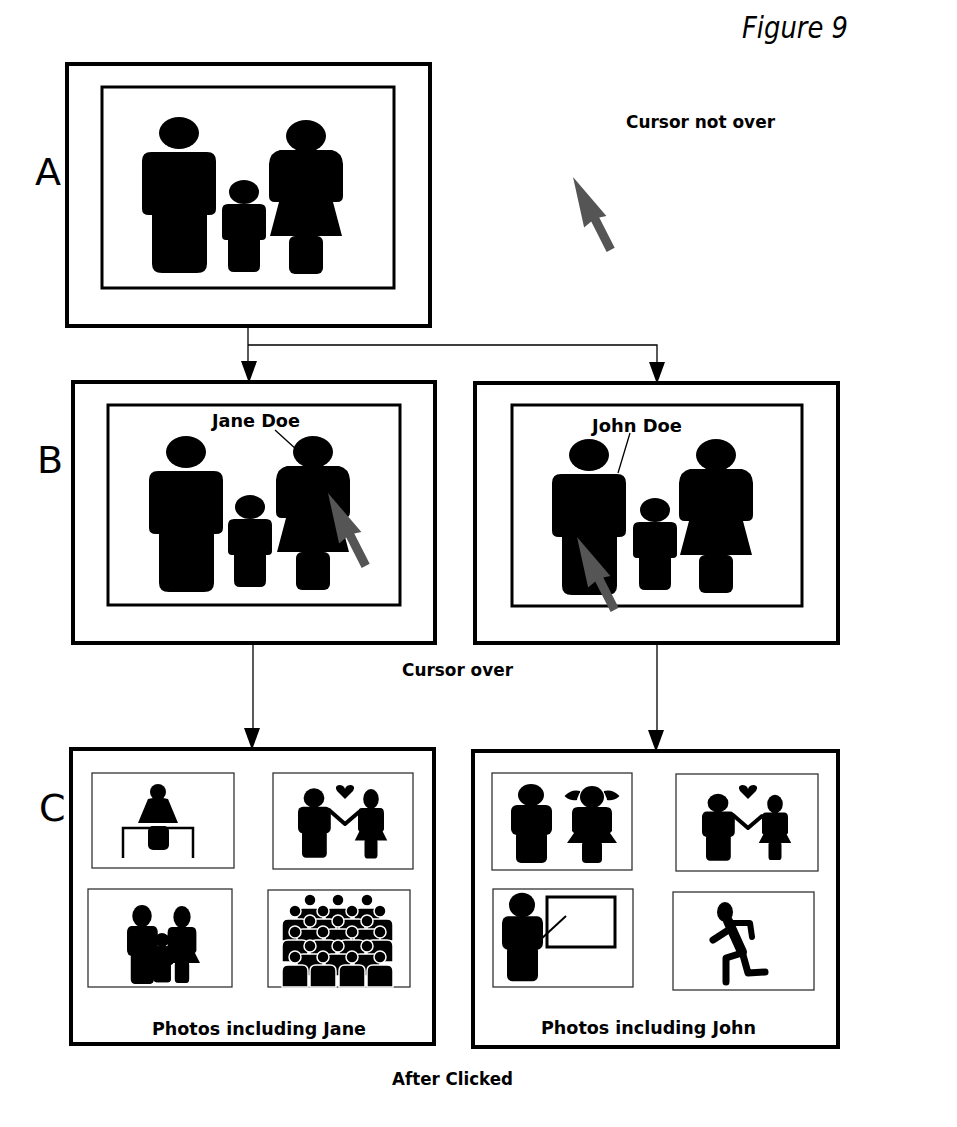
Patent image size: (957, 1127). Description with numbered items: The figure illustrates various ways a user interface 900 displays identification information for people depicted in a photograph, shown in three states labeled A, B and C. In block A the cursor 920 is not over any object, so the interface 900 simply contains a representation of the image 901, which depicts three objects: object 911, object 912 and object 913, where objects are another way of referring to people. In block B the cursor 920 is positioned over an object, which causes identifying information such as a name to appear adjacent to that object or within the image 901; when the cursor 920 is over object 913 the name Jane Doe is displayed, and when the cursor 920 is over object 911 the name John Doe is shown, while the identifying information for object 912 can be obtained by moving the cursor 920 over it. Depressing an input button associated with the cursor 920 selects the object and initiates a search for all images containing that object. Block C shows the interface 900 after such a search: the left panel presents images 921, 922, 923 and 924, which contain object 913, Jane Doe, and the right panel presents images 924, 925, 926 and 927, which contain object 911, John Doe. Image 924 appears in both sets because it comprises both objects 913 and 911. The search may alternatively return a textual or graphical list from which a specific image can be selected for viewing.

The interface 900 is at (452, 543).
The image 901 is at (512, 412).
The object 911 is at (548, 515).
The object 912 is at (690, 623).
The object 913 is at (752, 515).
The cursor 920 is at (605, 608).
The image 921 is at (163, 771).
The image 922 is at (163, 985).
The image 923 is at (412, 938).
The image 924 is at (769, 774).
The image 925 is at (561, 772).
The image 926 is at (564, 987).
The image 927 is at (811, 942).